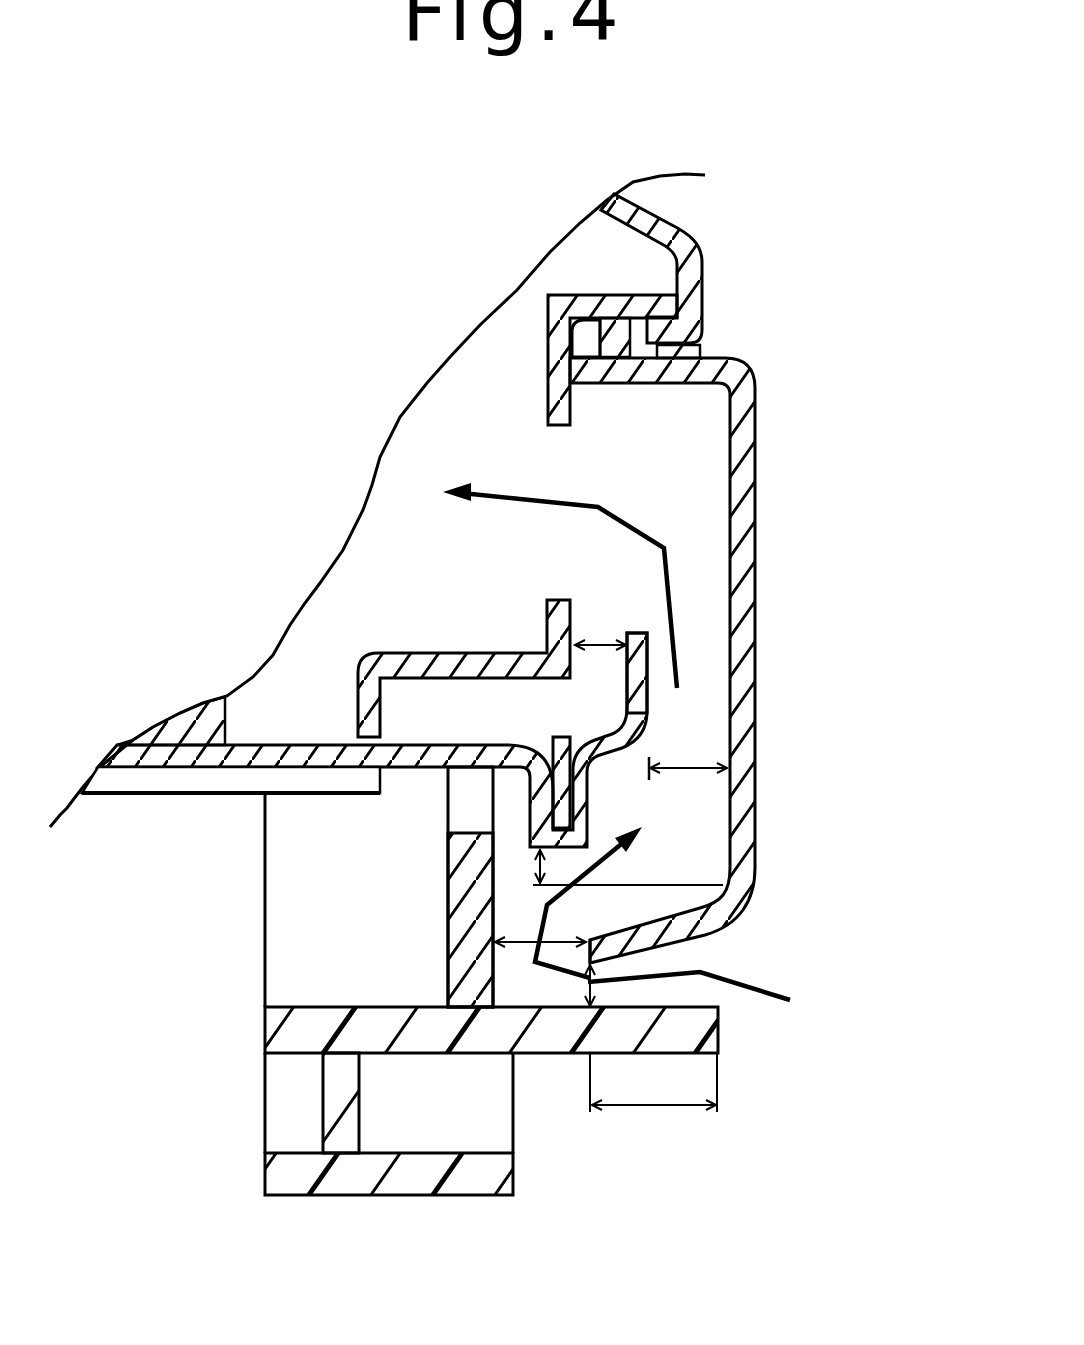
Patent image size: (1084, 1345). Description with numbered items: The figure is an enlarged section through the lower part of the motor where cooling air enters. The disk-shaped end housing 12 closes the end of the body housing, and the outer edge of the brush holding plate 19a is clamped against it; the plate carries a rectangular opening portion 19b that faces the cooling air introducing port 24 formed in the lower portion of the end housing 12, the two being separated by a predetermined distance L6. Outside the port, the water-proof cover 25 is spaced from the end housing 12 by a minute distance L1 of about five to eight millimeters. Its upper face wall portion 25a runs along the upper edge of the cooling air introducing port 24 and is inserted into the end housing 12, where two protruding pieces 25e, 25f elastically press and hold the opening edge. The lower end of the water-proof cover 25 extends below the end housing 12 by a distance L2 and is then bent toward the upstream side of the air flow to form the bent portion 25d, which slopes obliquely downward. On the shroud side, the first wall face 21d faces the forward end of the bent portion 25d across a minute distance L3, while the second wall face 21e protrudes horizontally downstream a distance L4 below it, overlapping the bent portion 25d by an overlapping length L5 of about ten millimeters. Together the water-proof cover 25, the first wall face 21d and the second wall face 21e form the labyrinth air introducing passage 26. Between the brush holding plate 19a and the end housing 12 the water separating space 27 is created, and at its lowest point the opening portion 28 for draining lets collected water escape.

The end housing 12 is at (431, 471).
The brush holding plate 19a is at (514, 331).
The opening portion 19b is at (412, 668).
The first wall face 21d is at (320, 887).
The second wall face 21e is at (585, 1101).
The cooling air introducing port 24 is at (742, 654).
The water-proof cover 25 is at (755, 601).
The upper face wall portion 25a is at (736, 626).
The bent portion 25d is at (751, 935).
The protruding piece 25e is at (779, 299).
The protruding piece 25f is at (519, 273).
The air introducing passage 26 is at (664, 741).
The water separating space 27 is at (728, 710).
The opening portion for draining 28 is at (364, 820).
The minute distance L1 is at (751, 791).
The predetermined distance L2 is at (446, 892).
The predetermined minute distance L3 is at (540, 1110).
The predetermined distance L4 is at (736, 1018).
The overlapping length L5 is at (653, 1168).
The predetermined distance L6 is at (716, 590).